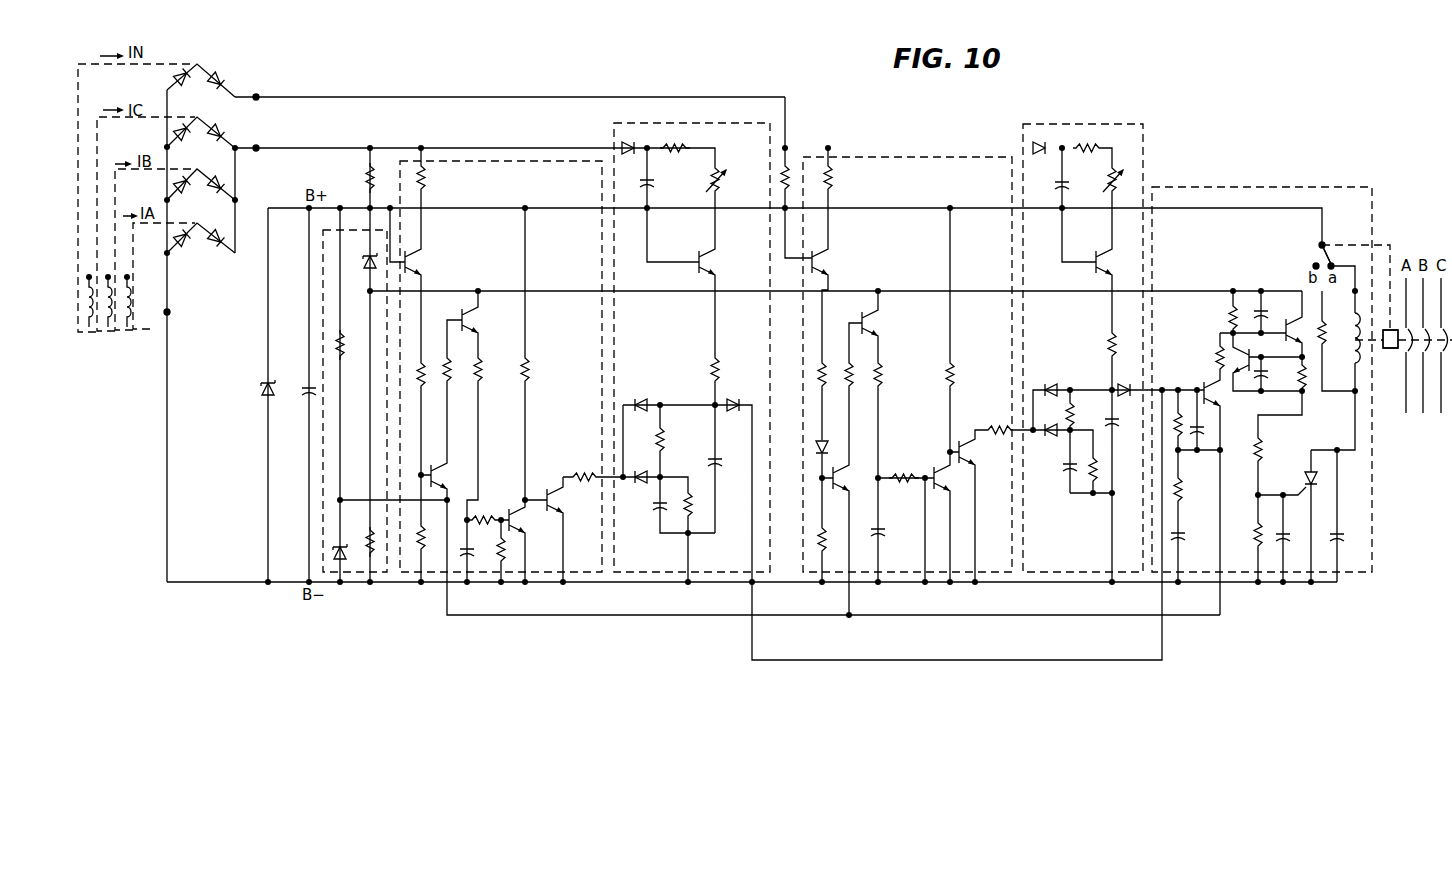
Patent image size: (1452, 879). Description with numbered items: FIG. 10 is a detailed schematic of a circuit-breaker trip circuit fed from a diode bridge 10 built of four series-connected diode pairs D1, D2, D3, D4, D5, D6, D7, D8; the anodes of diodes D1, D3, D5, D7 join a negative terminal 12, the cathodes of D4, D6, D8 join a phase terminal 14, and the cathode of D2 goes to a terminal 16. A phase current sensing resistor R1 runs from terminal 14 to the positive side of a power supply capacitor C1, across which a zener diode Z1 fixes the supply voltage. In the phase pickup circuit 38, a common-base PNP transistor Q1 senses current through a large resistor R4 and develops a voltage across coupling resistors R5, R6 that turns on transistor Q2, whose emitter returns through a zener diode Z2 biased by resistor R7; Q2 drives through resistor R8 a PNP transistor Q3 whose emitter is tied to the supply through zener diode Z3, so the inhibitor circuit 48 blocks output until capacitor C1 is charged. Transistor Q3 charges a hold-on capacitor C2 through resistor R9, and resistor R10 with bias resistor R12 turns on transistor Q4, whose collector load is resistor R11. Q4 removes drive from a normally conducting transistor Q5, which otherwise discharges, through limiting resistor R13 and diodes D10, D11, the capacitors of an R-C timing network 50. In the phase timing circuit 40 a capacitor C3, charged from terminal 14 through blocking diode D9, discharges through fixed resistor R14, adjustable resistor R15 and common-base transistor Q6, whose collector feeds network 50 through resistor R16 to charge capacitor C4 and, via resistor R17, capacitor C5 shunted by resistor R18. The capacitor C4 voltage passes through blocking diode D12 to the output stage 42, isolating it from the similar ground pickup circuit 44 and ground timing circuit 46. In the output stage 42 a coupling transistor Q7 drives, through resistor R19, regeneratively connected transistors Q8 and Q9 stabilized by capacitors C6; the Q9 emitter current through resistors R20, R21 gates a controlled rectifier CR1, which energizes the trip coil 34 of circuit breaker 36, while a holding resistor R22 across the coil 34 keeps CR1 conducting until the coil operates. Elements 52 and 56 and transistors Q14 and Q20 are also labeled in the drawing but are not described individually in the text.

The bridge 10 is at (208, 174).
The common line or terminal 12 is at (177, 312).
The common line or terminal 14 is at (259, 139).
The line or terminal 16 is at (257, 89).
The trip coil 34 is at (1359, 362).
The circuit breaker 36 is at (1388, 364).
The phase pickup circuit 38 is at (430, 160).
The phase timing circuit 40 is at (614, 133).
The output circuit 42 is at (1238, 187).
The ground pickup circuit 44 is at (886, 157).
The ground timing circuit 46 is at (1080, 124).
The inhibitor circuit 48 is at (322, 338).
The R-C timing network 50 is at (690, 473).
The reset switch 52 is at (1335, 255).
The diode filter network 56 is at (1090, 500).
The diode D1 is at (189, 86).
The diode D2 is at (229, 75).
The diode D3 is at (189, 139).
The diode D4 is at (227, 127).
The diode D5 is at (189, 192).
The diode D6 is at (220, 178).
The diode D7 is at (188, 246).
The diode D8 is at (219, 230).
The blocking diode D9 is at (630, 139).
The diode D10 is at (642, 396).
The diode D11 is at (642, 468).
The blocking diode D12 is at (738, 396).
The zener diode Z1 is at (257, 396).
The zener diode Z2 is at (346, 543).
The zener diode Z3 is at (360, 272).
The power supply capacitor C1 is at (304, 400).
The hold-on capacitor C2 is at (474, 544).
The capacitor C3 is at (658, 187).
The capacitor C4 is at (726, 464).
The capacitor C5 is at (647, 513).
The stabilizing capacitors C6 is at (1272, 341).
The phase current sensing resistor R1 is at (360, 178).
The resistor R4 is at (433, 178).
The coupling resistor R5 is at (412, 366).
The coupling resistor R6 is at (431, 535).
The bias resistor R7 is at (350, 345).
The coupling resistor R8 is at (455, 365).
The resistor R9 is at (490, 370).
The coupling resistor R10 is at (490, 510).
The resistor R11 is at (543, 370).
The bias resistor R12 is at (659, 366).
The limiting resistor R13 is at (582, 469).
The fixed resistor R14 is at (675, 138).
The adjustable resistor R15 is at (729, 182).
The resistor R16 is at (733, 370).
The resistor R17 is at (679, 440).
The resistor R18 is at (704, 505).
The coupling resistor R19 is at (1203, 358).
The resistor R20 is at (1276, 449).
The resistor R21 is at (1245, 536).
The holding resistor R22 is at (1327, 327).
The phase overcurrent sensing PNP transistor Q1 is at (419, 262).
The NPN transistor Q2 is at (444, 476).
The PNP transistor Q3 is at (478, 320).
The NPN transistor Q4 is at (530, 520).
The normally conducting NPN transistor Q5 is at (563, 500).
The PNP transistor Q6 is at (714, 262).
The NPN coupling transistor Q7 is at (1218, 393).
The PNP transistor Q8 is at (1299, 330).
The NPN transistor Q9 is at (1238, 360).
The transistor Q14 is at (978, 452).
The transistor Q20 is at (849, 478).
The controlled rectifier CR1 is at (1292, 481).